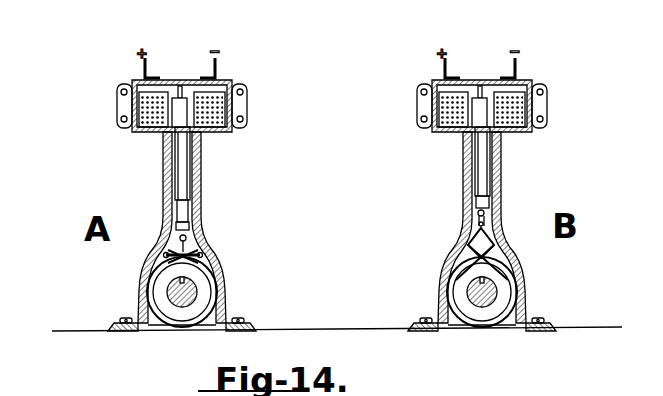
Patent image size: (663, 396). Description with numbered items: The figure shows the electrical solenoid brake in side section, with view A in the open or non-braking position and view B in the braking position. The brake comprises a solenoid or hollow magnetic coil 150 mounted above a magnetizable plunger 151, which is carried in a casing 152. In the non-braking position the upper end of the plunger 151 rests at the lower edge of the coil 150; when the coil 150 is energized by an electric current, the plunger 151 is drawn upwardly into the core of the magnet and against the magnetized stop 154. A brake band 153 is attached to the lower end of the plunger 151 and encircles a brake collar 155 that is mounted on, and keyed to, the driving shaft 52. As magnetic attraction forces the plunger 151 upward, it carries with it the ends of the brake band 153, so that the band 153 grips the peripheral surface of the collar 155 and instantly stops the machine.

In FIG. 14A, the solenoid or hollow magnetic coil 150 is at (132, 85).
In FIG. 14B, the solenoid or hollow magnetic coil 150 is at (481, 120).
In FIG. 14A, the magnetizable plunger 151 is at (183, 179).
In FIG. 14B, the magnetizable plunger 151 is at (510, 167).
In FIG. 14A, the casing 152 is at (200, 206).
In FIG. 14B, the casing 152 is at (482, 231).
In FIG. 14A, the brake band 153 is at (205, 288).
In FIG. 14B, the brake band 153 is at (513, 292).
In FIG. 14A, the magnetized stop 154 is at (181, 86).
In FIG. 14B, the magnetized stop 154 is at (483, 86).
In FIG. 14A, the brake collar 155 is at (221, 275).
In FIG. 14B, the brake collar 155 is at (458, 245).
In FIG. 14A, the driving shaft 52 is at (172, 289).
In FIG. 14B, the driving shaft 52 is at (449, 292).